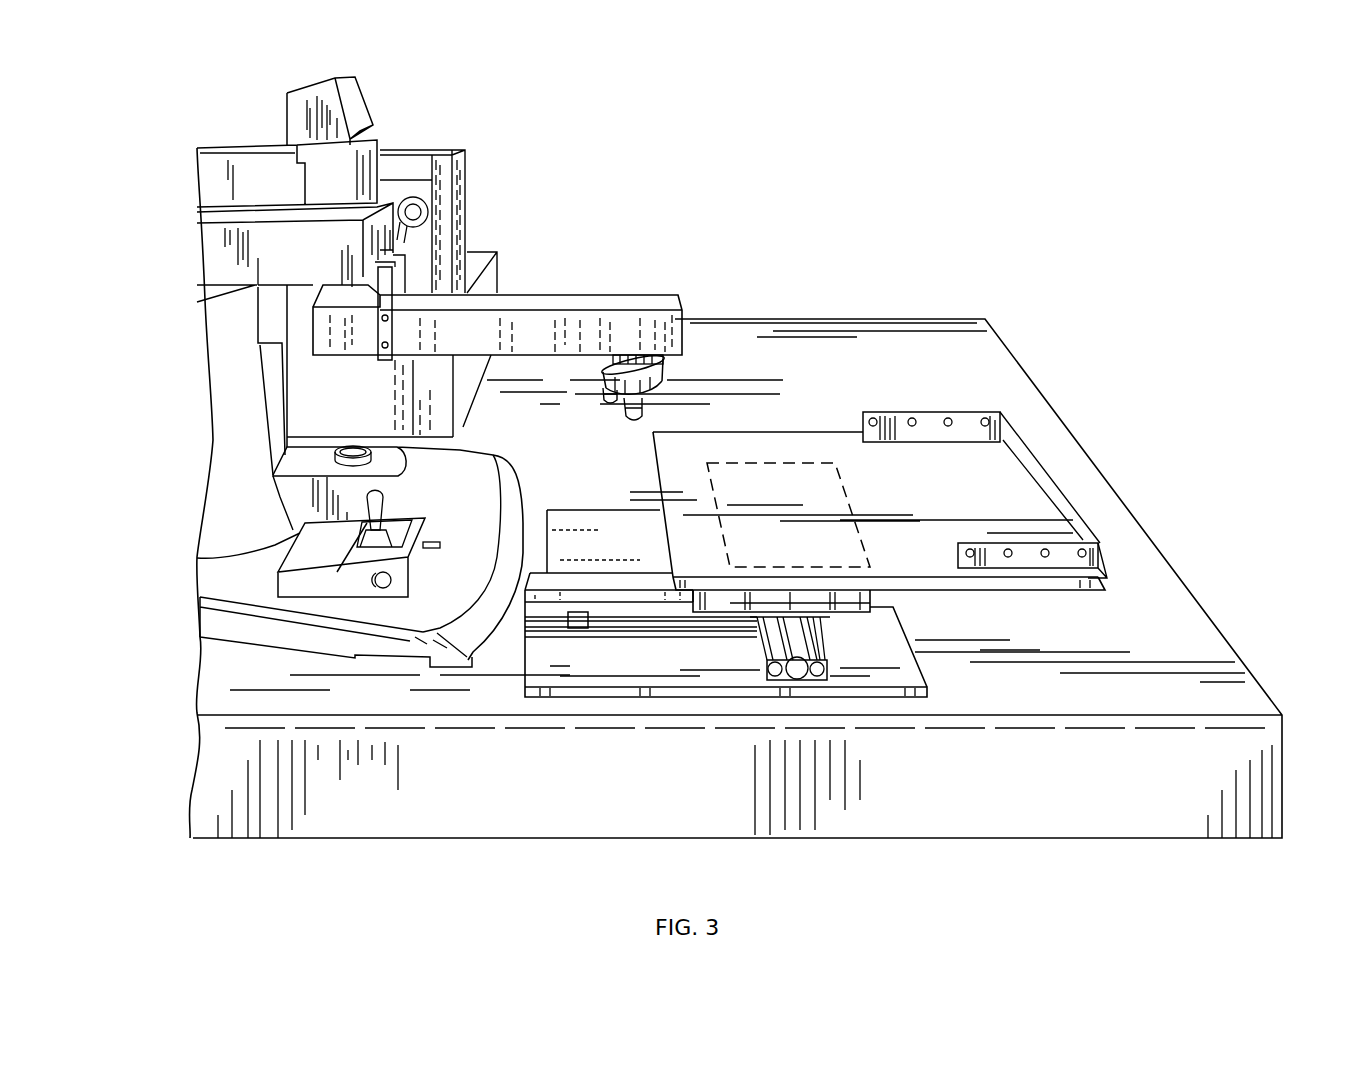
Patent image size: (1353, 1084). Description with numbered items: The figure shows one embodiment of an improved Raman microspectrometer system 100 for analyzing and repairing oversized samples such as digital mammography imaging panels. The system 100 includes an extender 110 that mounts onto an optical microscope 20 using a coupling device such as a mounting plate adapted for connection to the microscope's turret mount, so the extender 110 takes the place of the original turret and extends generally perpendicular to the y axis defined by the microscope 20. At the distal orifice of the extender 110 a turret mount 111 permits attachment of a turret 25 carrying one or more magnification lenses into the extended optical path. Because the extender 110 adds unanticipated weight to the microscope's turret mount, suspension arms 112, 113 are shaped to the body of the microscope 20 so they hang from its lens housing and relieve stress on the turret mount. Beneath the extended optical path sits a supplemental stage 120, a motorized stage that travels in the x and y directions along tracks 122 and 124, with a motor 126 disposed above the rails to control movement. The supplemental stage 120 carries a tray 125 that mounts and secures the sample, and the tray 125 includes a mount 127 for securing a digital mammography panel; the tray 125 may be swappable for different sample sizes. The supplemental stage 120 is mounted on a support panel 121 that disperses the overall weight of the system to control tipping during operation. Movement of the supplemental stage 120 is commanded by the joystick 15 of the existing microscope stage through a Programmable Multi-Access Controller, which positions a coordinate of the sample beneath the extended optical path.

The Raman microspectrometer system 100 is at (735, 132).
The optical microscope 20 is at (222, 398).
The joystick 15 is at (353, 580).
The extender 110 is at (577, 286).
The turret mount 111 is at (667, 358).
The suspension arm 112 is at (381, 361).
The suspension arm 113 is at (408, 274).
The turret 25 is at (623, 424).
The supplemental stage 120 is at (625, 648).
The support panel 121 is at (883, 652).
The track 122 is at (614, 588).
The track 124 is at (798, 672).
The tray 125 is at (812, 440).
The motor 126 is at (847, 493).
The mount 127 is at (1022, 446).